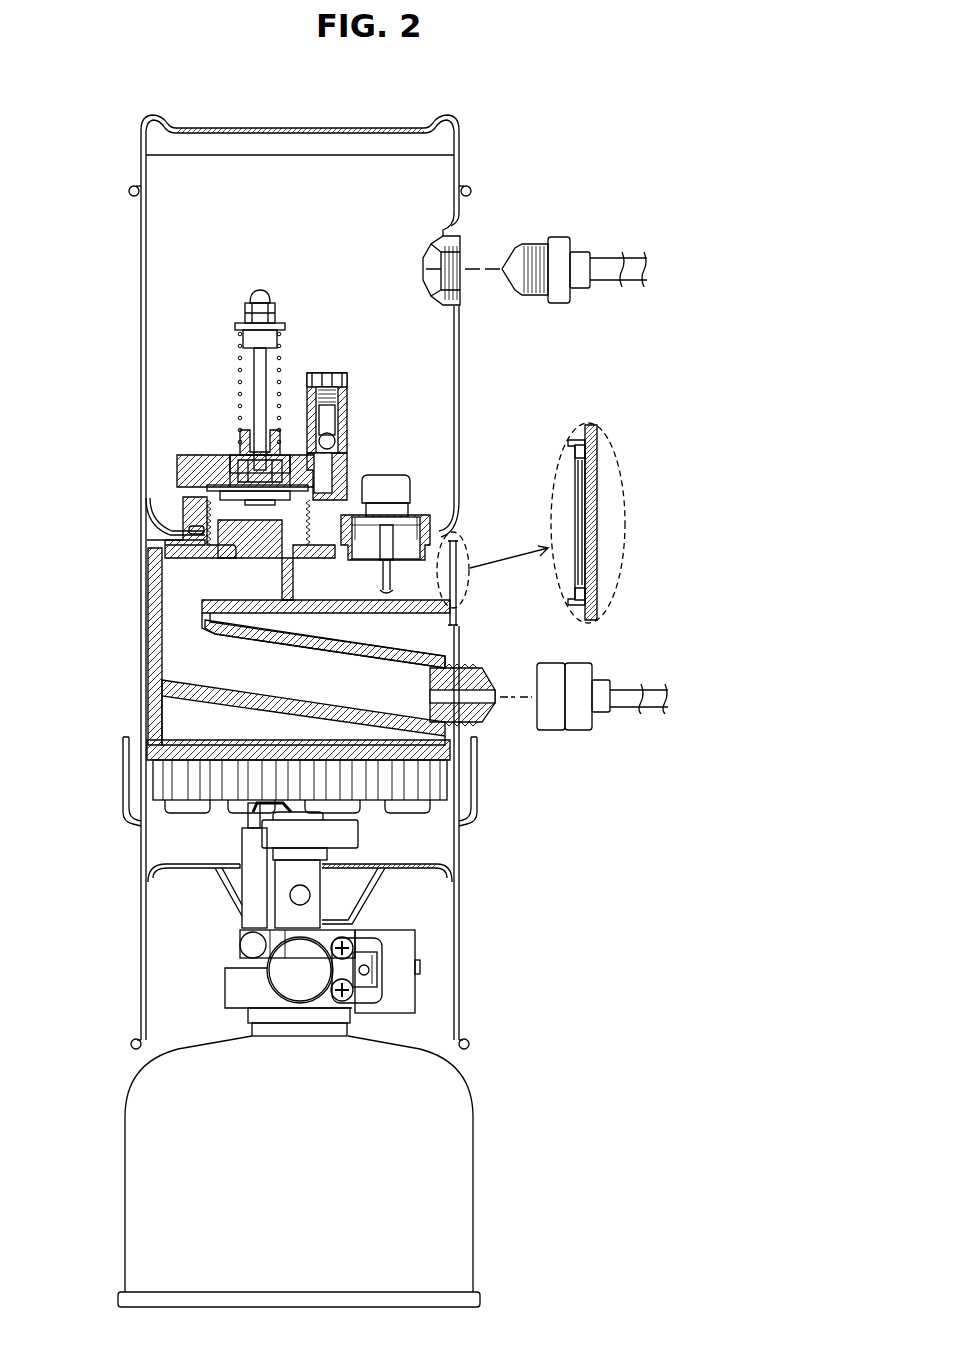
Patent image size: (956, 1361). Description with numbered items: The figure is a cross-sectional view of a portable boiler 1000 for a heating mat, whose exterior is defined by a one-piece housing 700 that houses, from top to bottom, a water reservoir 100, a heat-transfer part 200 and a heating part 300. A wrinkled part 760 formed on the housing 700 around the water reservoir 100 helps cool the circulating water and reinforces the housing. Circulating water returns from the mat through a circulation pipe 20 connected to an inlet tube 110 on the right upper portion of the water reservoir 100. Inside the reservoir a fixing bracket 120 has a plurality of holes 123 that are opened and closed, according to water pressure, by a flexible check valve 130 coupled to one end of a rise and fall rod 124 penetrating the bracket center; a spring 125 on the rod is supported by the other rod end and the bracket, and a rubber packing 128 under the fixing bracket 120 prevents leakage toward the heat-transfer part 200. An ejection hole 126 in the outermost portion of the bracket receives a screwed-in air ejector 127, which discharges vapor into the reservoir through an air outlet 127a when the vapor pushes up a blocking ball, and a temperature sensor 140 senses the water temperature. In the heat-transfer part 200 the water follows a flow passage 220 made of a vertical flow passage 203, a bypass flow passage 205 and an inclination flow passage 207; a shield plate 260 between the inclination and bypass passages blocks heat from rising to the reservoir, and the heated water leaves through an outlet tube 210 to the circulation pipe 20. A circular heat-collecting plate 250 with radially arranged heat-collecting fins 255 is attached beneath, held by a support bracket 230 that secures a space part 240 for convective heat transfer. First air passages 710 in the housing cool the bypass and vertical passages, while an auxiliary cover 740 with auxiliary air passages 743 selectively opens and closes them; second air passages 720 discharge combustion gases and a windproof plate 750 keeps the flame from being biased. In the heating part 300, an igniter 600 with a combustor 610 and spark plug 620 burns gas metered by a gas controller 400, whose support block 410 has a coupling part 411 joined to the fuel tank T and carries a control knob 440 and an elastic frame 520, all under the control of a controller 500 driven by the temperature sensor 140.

The portable boiler 1000 is at (549, 79).
The water reservoir 100 is at (460, 390).
The inlet tube 110 is at (454, 222).
The circulation pipe 20 is at (622, 280).
The wrinkled part 760 is at (146, 336).
The fixing bracket 120 is at (190, 468).
The holes 123 is at (218, 455).
The rise and fall rod 124 is at (262, 368).
The spring 125 is at (240, 360).
The ejection hole 126 is at (332, 480).
The air ejector 127 is at (347, 397).
The air outlet 127a is at (337, 438).
The check valve 130 is at (195, 493).
The temperature sensor 140 is at (408, 487).
The vertical flow passage 203 is at (250, 522).
The rubber packing 128 is at (190, 540).
The bypass flow passage 205 is at (212, 578).
The shield plate 260 is at (440, 620).
The flow passage 220 is at (172, 623).
The inclination flow passage 207 is at (237, 662).
The support bracket 230 is at (237, 690).
The space part 240 is at (188, 720).
The heat-transfer part 200 is at (458, 652).
The outlet tube 210 is at (478, 715).
The first air passages 710 is at (593, 543).
The auxiliary cover 740 is at (582, 447).
The auxiliary air passages 743 is at (583, 496).
The heat-collecting plate 250 is at (160, 750).
The heat-collecting fins 255 is at (160, 778).
The second air passages 720 is at (143, 806).
The windproof plate 750 is at (478, 777).
The housing 700 is at (143, 921).
The combustor 610 is at (345, 828).
The spark plug 620 is at (255, 852).
The igniter 600 is at (366, 843).
The gas controller 400 is at (226, 972).
The support block 410 is at (235, 990).
The coupling part 411 is at (255, 1015).
The control knob 440 is at (300, 990).
The heating part 300 is at (430, 942).
The elastic frame 520 is at (405, 995).
The controller 500 is at (392, 1015).
The fuel tank T is at (137, 1190).